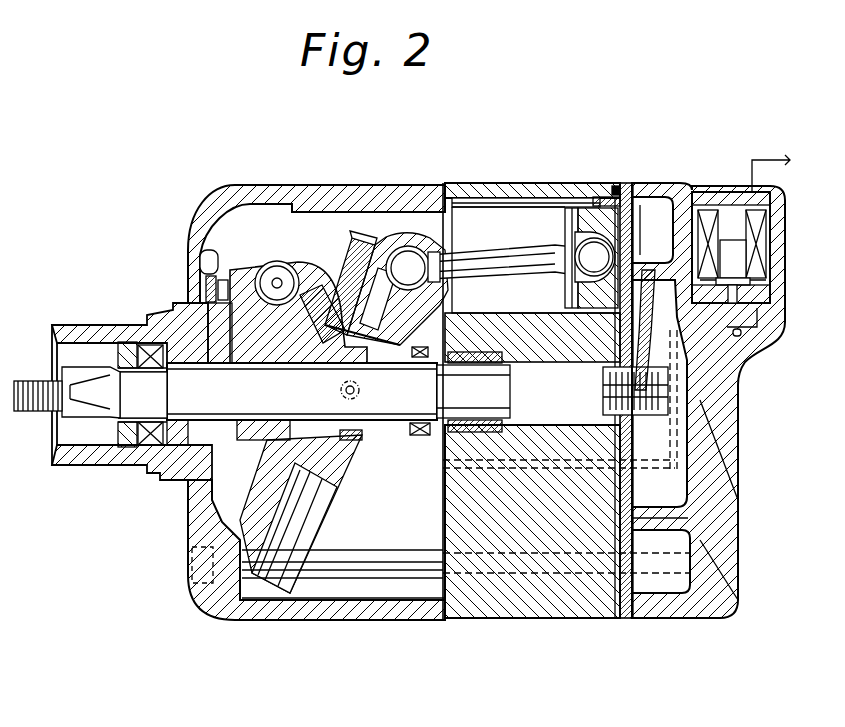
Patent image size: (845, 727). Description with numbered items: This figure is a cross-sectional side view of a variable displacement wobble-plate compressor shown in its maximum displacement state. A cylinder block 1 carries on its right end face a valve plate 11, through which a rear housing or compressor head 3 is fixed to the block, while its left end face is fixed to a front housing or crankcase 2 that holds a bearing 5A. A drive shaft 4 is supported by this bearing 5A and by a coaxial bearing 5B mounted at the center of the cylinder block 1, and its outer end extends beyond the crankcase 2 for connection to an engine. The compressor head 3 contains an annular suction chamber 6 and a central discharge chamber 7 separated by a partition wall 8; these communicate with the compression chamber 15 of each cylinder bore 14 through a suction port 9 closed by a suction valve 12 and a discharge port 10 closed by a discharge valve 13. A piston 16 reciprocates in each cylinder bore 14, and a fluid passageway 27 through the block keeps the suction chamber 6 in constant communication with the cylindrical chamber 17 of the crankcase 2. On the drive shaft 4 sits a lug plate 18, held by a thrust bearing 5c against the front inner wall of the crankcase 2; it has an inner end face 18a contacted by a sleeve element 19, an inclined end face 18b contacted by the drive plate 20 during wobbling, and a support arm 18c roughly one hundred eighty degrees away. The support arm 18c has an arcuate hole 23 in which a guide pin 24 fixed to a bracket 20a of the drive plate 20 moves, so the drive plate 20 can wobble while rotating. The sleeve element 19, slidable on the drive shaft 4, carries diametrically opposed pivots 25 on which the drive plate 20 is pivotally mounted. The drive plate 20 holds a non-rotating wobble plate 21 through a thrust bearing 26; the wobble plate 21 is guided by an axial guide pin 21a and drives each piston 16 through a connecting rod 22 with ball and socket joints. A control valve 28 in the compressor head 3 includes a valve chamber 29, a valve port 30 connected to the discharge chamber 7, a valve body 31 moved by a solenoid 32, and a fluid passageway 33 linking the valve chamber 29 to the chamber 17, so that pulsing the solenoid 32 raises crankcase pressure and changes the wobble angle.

The cylinder block 1 is at (508, 616).
The front housing 2 is at (308, 620).
The rear housing 3 is at (677, 616).
The drive shaft 4 is at (418, 436).
The bearing 5A is at (193, 430).
The bearing 5B is at (483, 432).
The thrust bearing 5c is at (200, 256).
The suction chamber 6 is at (655, 212).
The discharge chamber 7 is at (677, 482).
The partition wall 8 is at (658, 517).
The suction port 9 is at (630, 223).
The discharge port 10 is at (641, 297).
The valve plate 11 is at (628, 620).
The suction valve 12 is at (612, 186).
The discharge valve 13 is at (653, 230).
The cylinder bore 14 is at (479, 234).
The compression chamber 15 is at (592, 238).
The piston 16 is at (580, 225).
The cylindrical chamber 17 is at (381, 536).
The lug plate 18 is at (258, 350).
The end face 18a is at (345, 475).
The inclined end face 18b is at (205, 544).
The support arm 18c is at (248, 268).
The sleeve element 19 is at (360, 437).
The drive plate 20 is at (355, 240).
The bracket 20a is at (305, 262).
The wobble plate 21 is at (432, 240).
The guide pin 21a is at (377, 568).
The connecting rod 22 is at (495, 273).
The arcuate hole 23 is at (310, 293).
The guide pin 24 is at (277, 261).
The pivot 25 is at (360, 388).
The thrust bearing 26 is at (398, 248).
The fluid passageway 27 is at (487, 198).
The control valve 28 is at (723, 188).
The valve chamber 29 is at (760, 275).
The valve port 30 is at (752, 293).
The valve body 31 is at (756, 250).
The solenoid 32 is at (725, 252).
The fluid passageway 33 is at (748, 333).